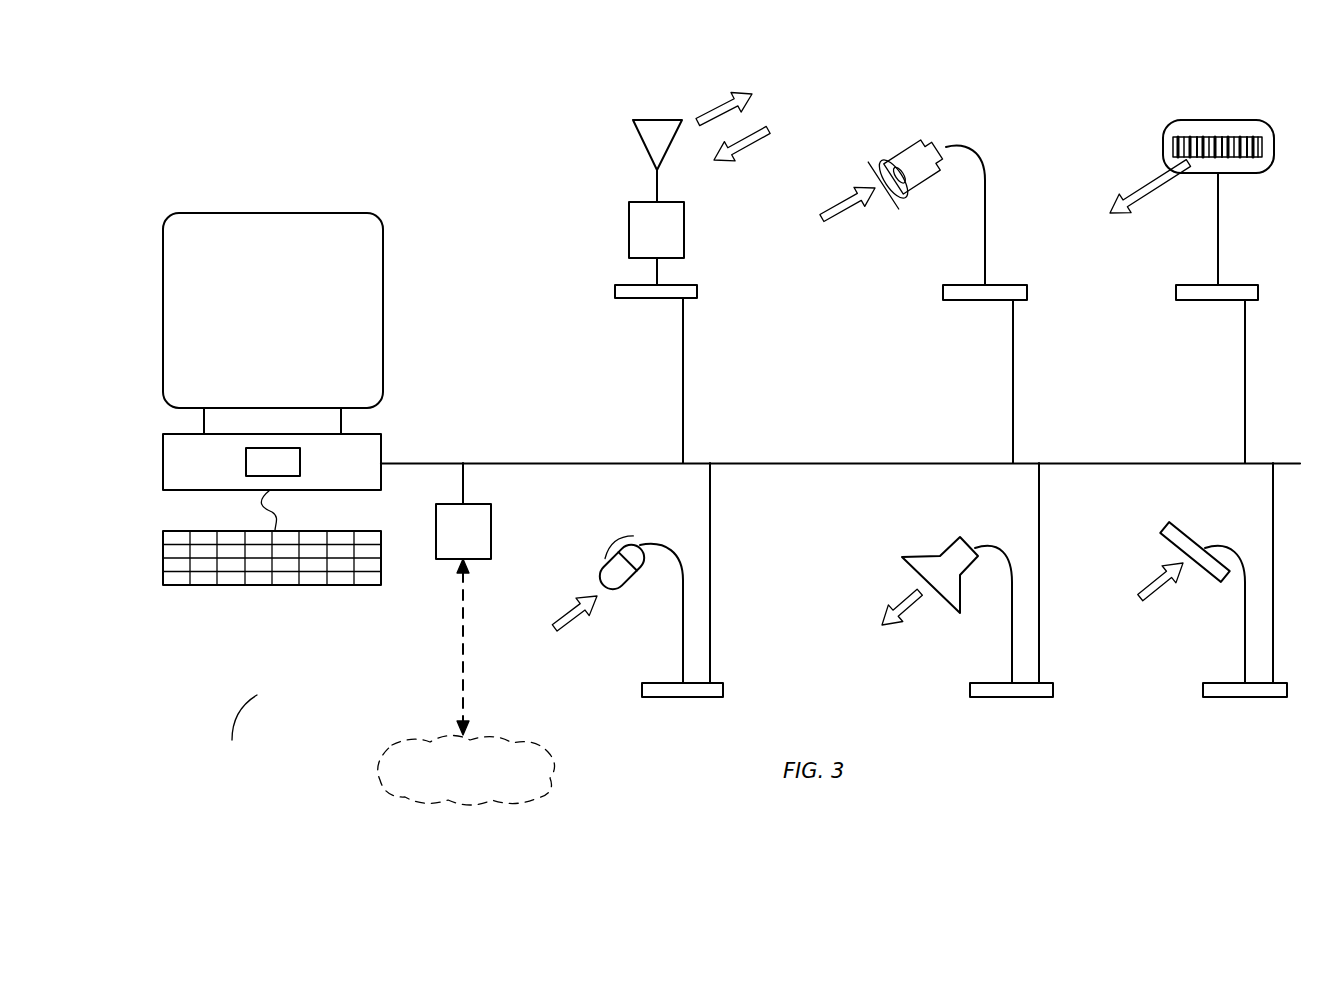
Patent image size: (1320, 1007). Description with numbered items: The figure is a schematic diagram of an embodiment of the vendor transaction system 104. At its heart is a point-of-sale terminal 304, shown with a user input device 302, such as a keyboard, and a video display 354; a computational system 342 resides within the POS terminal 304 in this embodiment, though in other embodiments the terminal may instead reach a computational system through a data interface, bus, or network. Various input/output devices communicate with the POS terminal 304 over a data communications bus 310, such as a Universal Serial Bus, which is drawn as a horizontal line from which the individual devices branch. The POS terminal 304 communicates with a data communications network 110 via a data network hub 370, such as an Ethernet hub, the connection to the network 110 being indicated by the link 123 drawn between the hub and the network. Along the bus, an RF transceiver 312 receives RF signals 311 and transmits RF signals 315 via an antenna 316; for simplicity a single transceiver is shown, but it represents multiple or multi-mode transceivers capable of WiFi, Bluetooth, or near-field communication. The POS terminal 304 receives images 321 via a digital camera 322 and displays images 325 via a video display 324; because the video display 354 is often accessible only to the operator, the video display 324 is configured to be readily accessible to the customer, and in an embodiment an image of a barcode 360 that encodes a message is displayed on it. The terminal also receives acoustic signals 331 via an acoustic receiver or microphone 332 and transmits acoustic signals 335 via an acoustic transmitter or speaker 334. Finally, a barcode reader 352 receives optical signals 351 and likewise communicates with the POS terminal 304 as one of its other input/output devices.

The vendor transaction system 104 is at (233, 731).
The data communications network 110 is at (552, 777).
The wireless communication link 123 is at (462, 668).
The user input device 302 is at (205, 586).
The point-of-sale terminal 304 is at (383, 442).
The data communications bus 310 is at (554, 462).
The RF signals 311 is at (749, 143).
The RF transceiver 312 is at (628, 229).
The RF signals 315 is at (718, 101).
The antenna 316 is at (647, 147).
The images 321 is at (849, 207).
The digital camera 322 is at (896, 144).
The video display 324 is at (1165, 124).
The images 325 is at (1149, 193).
The acoustic signals 331 is at (575, 615).
The acoustic receiver 332 is at (607, 557).
The acoustic transmitter 334 is at (903, 555).
The acoustic signals 335 is at (910, 615).
The computational system 342 is at (246, 460).
The optical signals 351 is at (1163, 587).
The barcode reader 352 is at (1168, 525).
The video display 354 is at (273, 213).
The barcode 360 is at (1242, 158).
The data network hub 370 is at (491, 511).